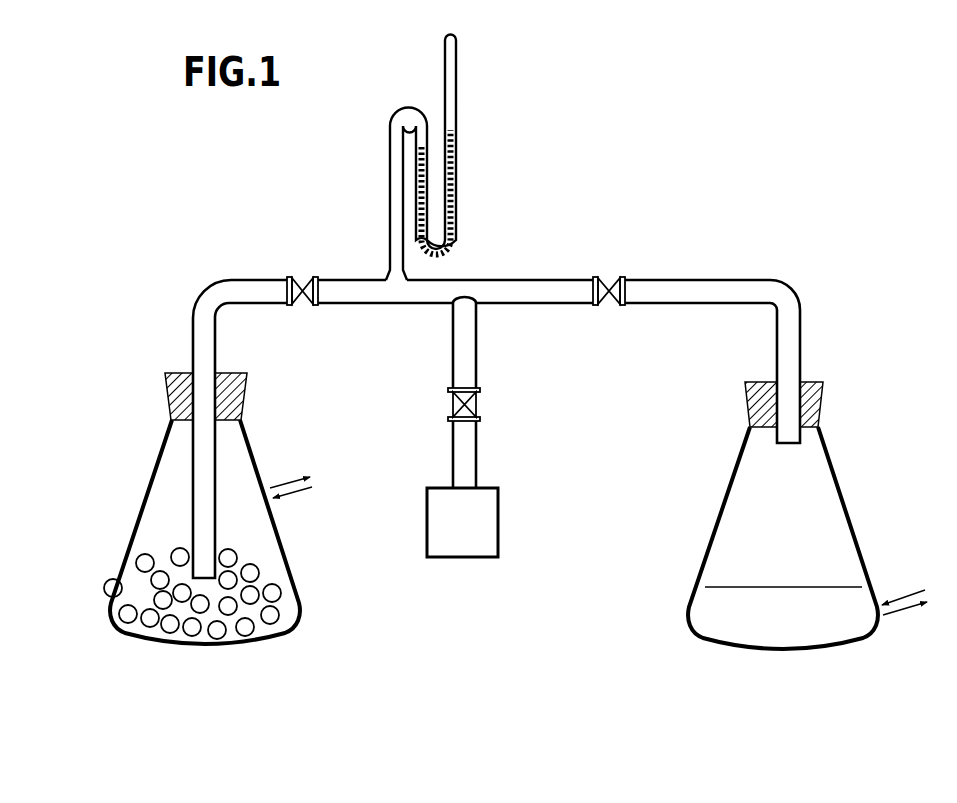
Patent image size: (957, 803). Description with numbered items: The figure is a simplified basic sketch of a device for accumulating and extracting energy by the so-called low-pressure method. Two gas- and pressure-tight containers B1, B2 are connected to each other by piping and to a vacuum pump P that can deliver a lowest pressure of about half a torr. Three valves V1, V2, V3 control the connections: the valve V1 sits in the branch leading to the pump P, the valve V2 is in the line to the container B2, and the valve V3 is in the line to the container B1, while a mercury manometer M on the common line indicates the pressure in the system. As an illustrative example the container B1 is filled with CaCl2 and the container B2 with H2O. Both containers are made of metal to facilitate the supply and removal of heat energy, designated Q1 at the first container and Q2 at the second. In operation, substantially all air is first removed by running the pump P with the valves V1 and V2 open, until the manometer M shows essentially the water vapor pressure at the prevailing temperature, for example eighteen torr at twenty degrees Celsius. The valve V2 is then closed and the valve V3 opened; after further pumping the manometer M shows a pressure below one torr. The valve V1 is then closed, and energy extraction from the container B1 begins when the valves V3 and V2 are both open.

The mercury manometer M is at (456, 186).
The valve V1 is at (483, 406).
The valve V2 is at (611, 275).
The valve V3 is at (308, 275).
The vacuum pump P is at (462, 522).
The container B1 is at (208, 648).
The container B2 is at (790, 655).
The calcium chloride CaCl2 is at (250, 593).
The water H2O is at (783, 610).
The heat energy Q1 is at (291, 475).
The heat energy Q2 is at (904, 590).